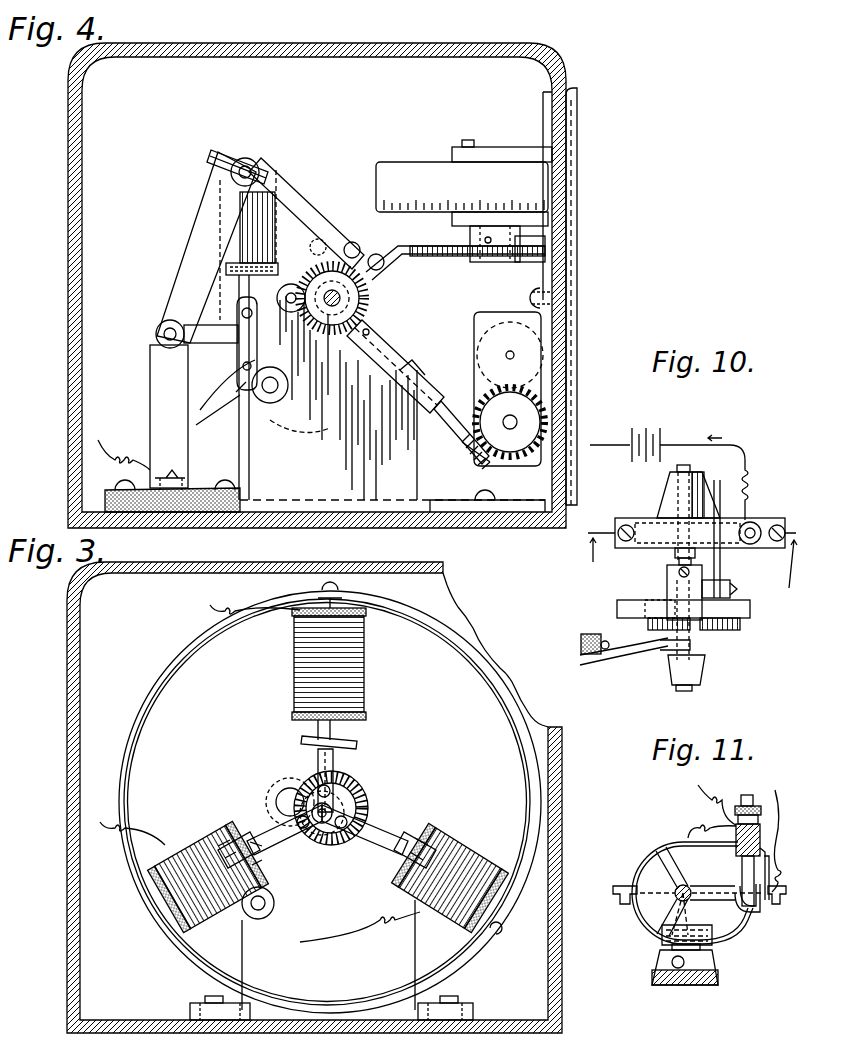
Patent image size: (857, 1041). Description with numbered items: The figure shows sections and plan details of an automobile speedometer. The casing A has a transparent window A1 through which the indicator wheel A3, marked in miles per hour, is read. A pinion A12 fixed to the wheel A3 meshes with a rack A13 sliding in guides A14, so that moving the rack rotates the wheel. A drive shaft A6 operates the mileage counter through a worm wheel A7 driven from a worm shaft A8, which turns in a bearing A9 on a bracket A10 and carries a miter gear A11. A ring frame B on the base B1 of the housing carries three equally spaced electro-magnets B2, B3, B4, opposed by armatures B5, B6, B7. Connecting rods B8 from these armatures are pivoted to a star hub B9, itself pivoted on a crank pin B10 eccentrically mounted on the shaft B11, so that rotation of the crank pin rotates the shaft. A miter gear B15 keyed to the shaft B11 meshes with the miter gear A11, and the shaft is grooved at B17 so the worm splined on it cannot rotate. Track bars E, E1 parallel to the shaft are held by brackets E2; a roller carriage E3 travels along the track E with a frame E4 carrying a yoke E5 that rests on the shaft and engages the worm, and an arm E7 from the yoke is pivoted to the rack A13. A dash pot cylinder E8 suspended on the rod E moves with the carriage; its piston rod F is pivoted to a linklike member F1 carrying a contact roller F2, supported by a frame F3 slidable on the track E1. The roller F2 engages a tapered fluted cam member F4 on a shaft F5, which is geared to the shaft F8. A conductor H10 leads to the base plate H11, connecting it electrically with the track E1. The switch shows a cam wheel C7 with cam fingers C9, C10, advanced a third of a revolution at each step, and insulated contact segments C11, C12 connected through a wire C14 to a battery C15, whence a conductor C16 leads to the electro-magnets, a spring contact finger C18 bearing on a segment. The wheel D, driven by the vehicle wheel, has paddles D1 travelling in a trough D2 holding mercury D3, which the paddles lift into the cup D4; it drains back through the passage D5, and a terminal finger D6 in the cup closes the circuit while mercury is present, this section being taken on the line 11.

In FIG. 4, the housing or casing A is at (68, 230).
In FIG. 3, the housing or casing A is at (67, 718).
In FIG. 4, the transparent window A1 is at (578, 270).
In FIG. 4, the indicator wheel A3 is at (418, 162).
In FIG. 4, the drive shaft A6 is at (512, 422).
In FIG. 4, the worm wheel A7 is at (488, 392).
In FIG. 4, the worm shaft A8 is at (450, 430).
In FIG. 4, the bearing A9 is at (425, 400).
In FIG. 4, the bracket A10 is at (240, 470).
In FIG. 3, the bracket A10 is at (242, 950).
In FIG. 4, the miter gear A11 is at (380, 330).
In FIG. 4, the pinion A12 is at (440, 262).
In FIG. 4, the rack A13 is at (520, 256).
In FIG. 4, the guides A14 is at (540, 268).
In FIG. 3, the ring frame B is at (170, 690).
In FIG. 4, the base or bottom B1 is at (520, 528).
In FIG. 3, the base or bottom B1 is at (490, 1020).
In FIG. 3, the electro-magnet B2 is at (468, 840).
In FIG. 3, the electro-magnet B3 is at (190, 832).
In FIG. 3, the electro-magnet B4 is at (364, 660).
In FIG. 3, the armature B5 is at (382, 812).
In FIG. 3, the armature B6 is at (256, 840).
In FIG. 3, the armature B7 is at (357, 745).
In FIG. 3, the connecting rods B8 is at (333, 770).
In FIG. 3, the star hub B9 is at (318, 790).
In FIG. 3, the crank pin B10 is at (318, 826).
In FIG. 4, the shaft B11 is at (318, 272).
In FIG. 3, the shaft B11 is at (368, 803).
In FIG. 4, the miter gear B15 is at (330, 355).
In FIG. 3, the miter gear B15 is at (335, 842).
In FIG. 4, the groove B17 is at (384, 264).
In FIG. 4, the track bar E is at (245, 172).
In FIG. 4, the track bar E1 is at (162, 332).
In FIG. 4, the brackets E2 is at (150, 385).
In FIG. 4, the roller carriage E3 is at (225, 156).
In FIG. 4, the frame E4 is at (300, 205).
In FIG. 4, the yoke E5 is at (352, 244).
In FIG. 4, the arm E7 is at (390, 258).
In FIG. 4, the dash pot cylinder E8 is at (258, 222).
In FIG. 4, the piston rod F is at (240, 276).
In FIG. 4, the linklike member F1 is at (236, 345).
In FIG. 4, the contact roller F2 is at (235, 372).
In FIG. 4, the frame F3 is at (214, 324).
In FIG. 4, the cam member F4 is at (226, 410).
In FIG. 4, the shaft F5 is at (288, 388).
In FIG. 3, the shaft F5 is at (260, 910).
In FIG. 4, the shaft F8 is at (280, 292).
In FIG. 3, the shaft F8 is at (282, 790).
In FIG. 4, the conductor H10 is at (112, 440).
In FIG. 4, the base plate H11 is at (180, 470).
In FIG. 10, the cam wheel C7 is at (667, 600).
In FIG. 10, the cam finger C9 is at (740, 615).
In FIG. 10, the cam finger C10 is at (617, 605).
In FIG. 10, the contact segment C11 is at (722, 630).
In FIG. 10, the contact segment C12 is at (670, 642).
In FIG. 10, the conducting wire C14 is at (698, 432).
In FIG. 11, the conducting wire C14 is at (700, 812).
In FIG. 10, the battery C15 is at (648, 432).
In FIG. 10, the conductor C16 is at (600, 432).
In FIG. 10, the spring contact finger C18 is at (635, 650).
In FIG. 10, the wheel D is at (660, 500).
In FIG. 11, the wheel D is at (672, 884).
In FIG. 11, the paddles or vanes D1 is at (682, 870).
In FIG. 10, the trough D2 is at (640, 510).
In FIG. 11, the trough D2 is at (640, 915).
In FIG. 11, the mercury D3 is at (665, 940).
In FIG. 10, the cup D4 is at (758, 520).
In FIG. 11, the cup D4 is at (760, 912).
In FIG. 11, the passage D5 is at (718, 950).
In FIG. 10, the terminal finger D6 is at (730, 478).
In FIG. 11, the terminal finger D6 is at (742, 870).
In FIG. 10, the section line 11 is at (690, 572).